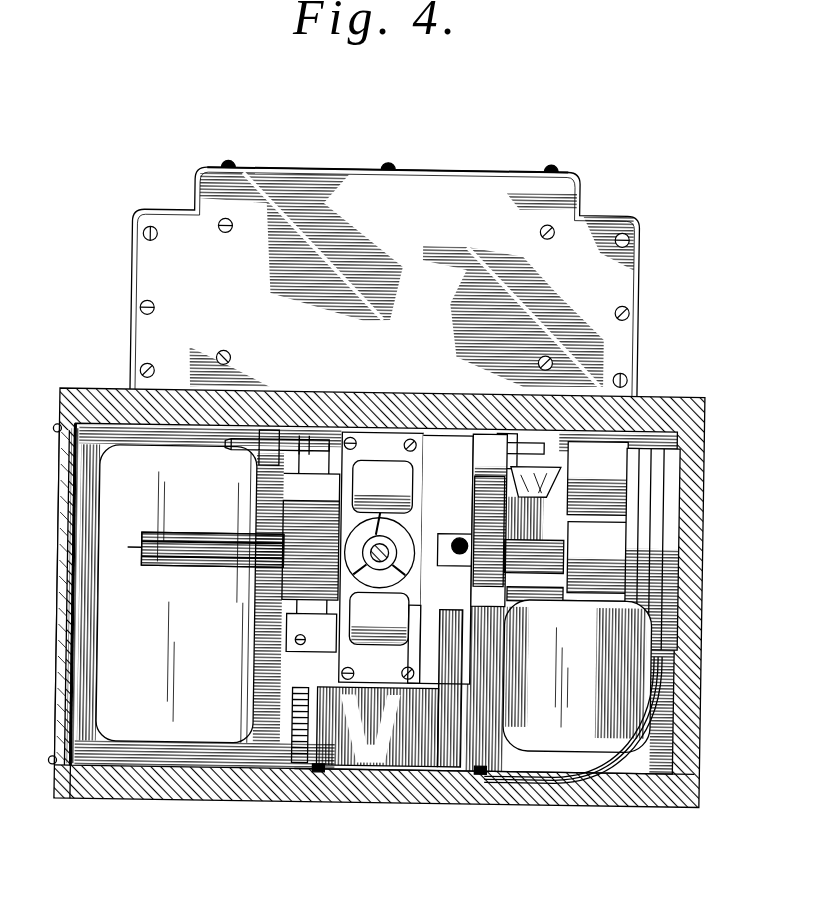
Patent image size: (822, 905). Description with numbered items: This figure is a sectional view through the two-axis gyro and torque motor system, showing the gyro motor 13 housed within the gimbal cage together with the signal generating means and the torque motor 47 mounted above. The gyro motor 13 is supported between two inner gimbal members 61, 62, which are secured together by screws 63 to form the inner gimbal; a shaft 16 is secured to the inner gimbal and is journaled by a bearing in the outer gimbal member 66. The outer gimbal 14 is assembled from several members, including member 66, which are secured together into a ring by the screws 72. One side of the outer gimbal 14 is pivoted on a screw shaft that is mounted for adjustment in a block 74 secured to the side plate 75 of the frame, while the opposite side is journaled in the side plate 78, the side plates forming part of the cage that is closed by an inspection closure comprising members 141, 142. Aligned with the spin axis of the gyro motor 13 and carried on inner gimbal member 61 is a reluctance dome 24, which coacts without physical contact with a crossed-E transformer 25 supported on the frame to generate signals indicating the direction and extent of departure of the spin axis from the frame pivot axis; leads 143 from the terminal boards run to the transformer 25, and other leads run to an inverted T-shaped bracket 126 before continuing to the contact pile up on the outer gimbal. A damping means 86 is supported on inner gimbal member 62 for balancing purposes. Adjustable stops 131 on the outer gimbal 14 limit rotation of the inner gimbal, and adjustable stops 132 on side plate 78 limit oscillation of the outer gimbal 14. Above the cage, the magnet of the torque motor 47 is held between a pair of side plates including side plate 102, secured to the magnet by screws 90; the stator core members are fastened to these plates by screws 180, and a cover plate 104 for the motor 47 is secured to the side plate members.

The gyro motor 13 is at (432, 624).
The outer gimbal 14 is at (431, 663).
The shaft 16 is at (373, 551).
The reluctance dome 24 is at (525, 592).
The crossed-E transformer 25 is at (604, 541).
The torque motor 47 is at (411, 264).
The inner gimbal member 61 is at (460, 534).
The inner gimbal member 62 is at (285, 572).
The screws 63 is at (470, 545).
The outer gimbal member 66 is at (350, 661).
The screws 72 is at (405, 441).
The block 74 is at (390, 750).
The side plate 75 is at (334, 790).
The side plate 78 is at (389, 396).
The damping means 86 is at (228, 530).
The screws 90 is at (223, 348).
The side plate 102 is at (625, 329).
The cover plate 104 is at (428, 165).
The inverted T-shaped bracket 126 is at (700, 547).
The adjustable stops 131 is at (313, 492).
The adjustable stops 132 is at (280, 427).
The inspection closure member 141 is at (62, 782).
The inspection closure member 142 is at (60, 698).
The leads 143 is at (470, 772).
The screws 180 is at (384, 302).